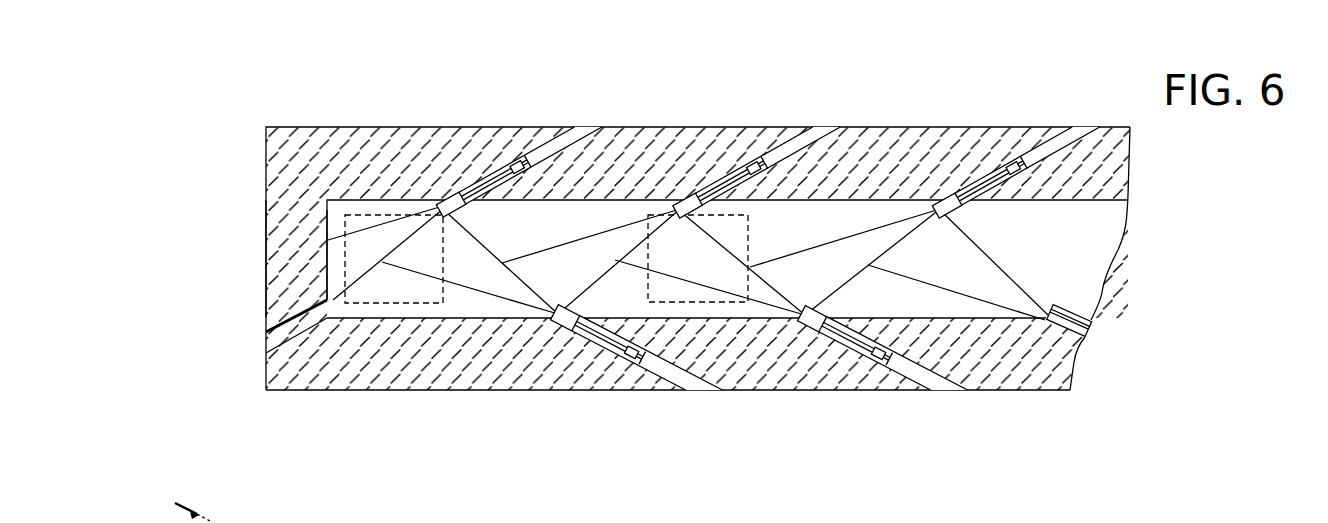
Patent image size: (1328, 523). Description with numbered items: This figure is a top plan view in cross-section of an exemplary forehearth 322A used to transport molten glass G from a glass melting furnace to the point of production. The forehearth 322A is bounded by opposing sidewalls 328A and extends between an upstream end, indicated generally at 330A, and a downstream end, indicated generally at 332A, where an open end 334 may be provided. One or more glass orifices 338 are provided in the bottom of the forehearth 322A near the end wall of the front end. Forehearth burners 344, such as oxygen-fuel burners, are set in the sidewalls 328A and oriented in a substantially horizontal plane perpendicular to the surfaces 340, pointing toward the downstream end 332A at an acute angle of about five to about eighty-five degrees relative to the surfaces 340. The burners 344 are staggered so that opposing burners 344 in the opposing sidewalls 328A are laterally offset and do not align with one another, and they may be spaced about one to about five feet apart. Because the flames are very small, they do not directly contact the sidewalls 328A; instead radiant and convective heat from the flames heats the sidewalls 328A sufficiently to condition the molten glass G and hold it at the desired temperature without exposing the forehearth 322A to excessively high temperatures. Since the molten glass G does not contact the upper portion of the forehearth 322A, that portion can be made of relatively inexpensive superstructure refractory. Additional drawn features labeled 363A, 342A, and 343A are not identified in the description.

The forehearth 322A is at (266, 92).
The sidewalls 328A is at (343, 127).
The surfaces 340 is at (364, 196).
The forehearth burners 344 is at (474, 182).
The connector channel 342A is at (570, 138).
The glass orifices 338 is at (447, 240).
The side wall 363A is at (265, 228).
The downstream end 332A is at (245, 281).
The input channel 343A is at (266, 343).
The open end 334 is at (1114, 260).
The molten glass G is at (1070, 278).
The upstream end 330A is at (1110, 340).